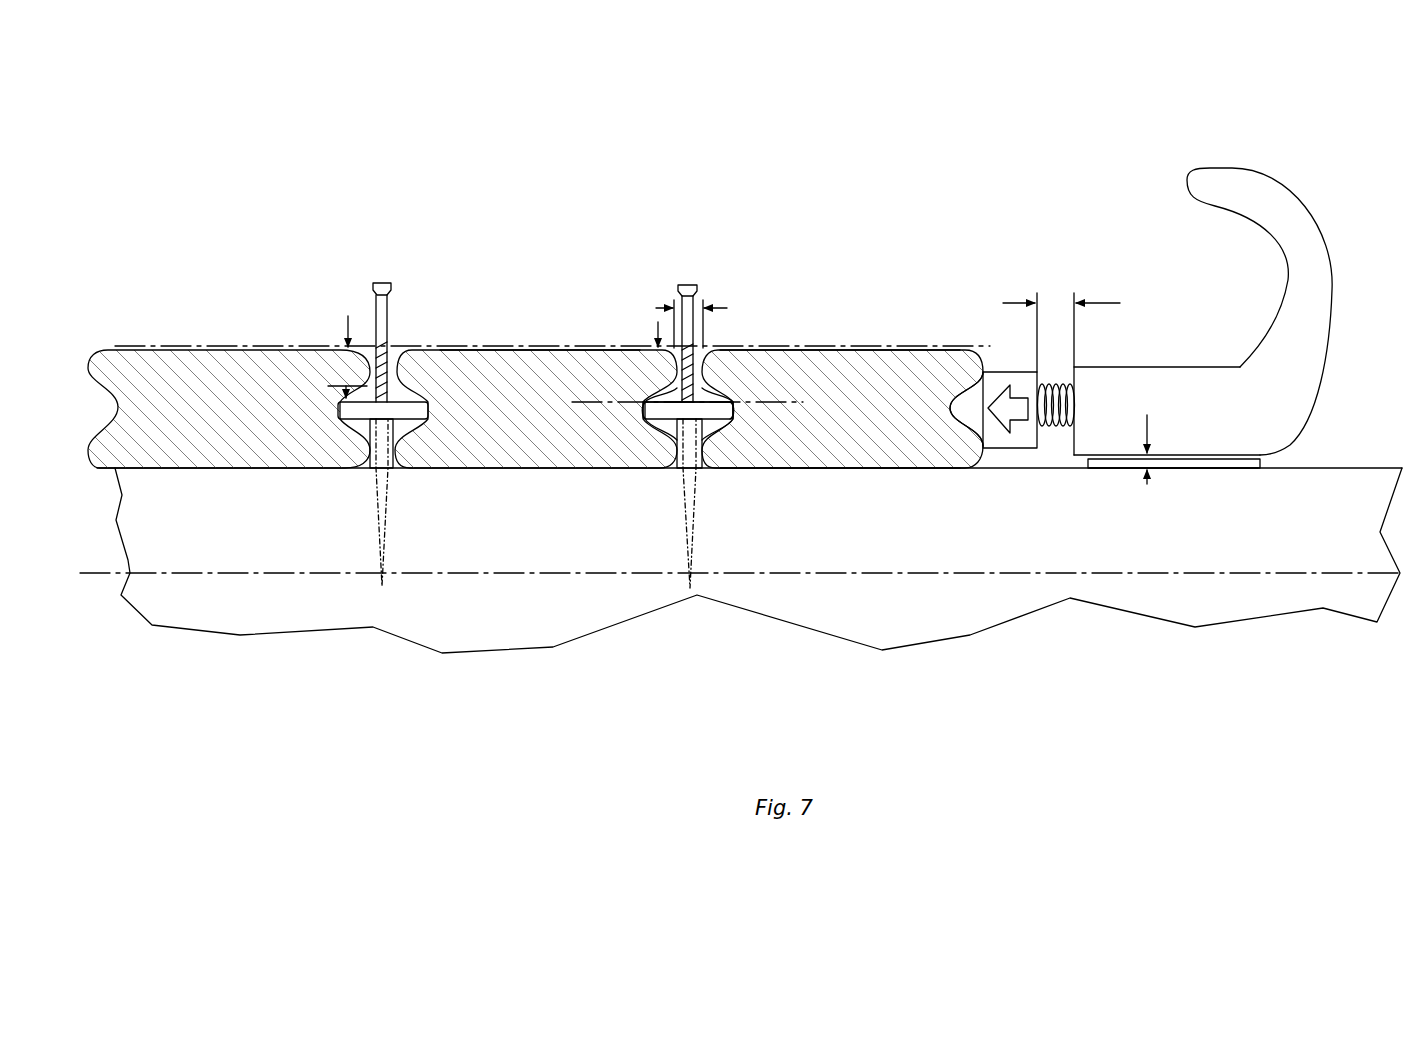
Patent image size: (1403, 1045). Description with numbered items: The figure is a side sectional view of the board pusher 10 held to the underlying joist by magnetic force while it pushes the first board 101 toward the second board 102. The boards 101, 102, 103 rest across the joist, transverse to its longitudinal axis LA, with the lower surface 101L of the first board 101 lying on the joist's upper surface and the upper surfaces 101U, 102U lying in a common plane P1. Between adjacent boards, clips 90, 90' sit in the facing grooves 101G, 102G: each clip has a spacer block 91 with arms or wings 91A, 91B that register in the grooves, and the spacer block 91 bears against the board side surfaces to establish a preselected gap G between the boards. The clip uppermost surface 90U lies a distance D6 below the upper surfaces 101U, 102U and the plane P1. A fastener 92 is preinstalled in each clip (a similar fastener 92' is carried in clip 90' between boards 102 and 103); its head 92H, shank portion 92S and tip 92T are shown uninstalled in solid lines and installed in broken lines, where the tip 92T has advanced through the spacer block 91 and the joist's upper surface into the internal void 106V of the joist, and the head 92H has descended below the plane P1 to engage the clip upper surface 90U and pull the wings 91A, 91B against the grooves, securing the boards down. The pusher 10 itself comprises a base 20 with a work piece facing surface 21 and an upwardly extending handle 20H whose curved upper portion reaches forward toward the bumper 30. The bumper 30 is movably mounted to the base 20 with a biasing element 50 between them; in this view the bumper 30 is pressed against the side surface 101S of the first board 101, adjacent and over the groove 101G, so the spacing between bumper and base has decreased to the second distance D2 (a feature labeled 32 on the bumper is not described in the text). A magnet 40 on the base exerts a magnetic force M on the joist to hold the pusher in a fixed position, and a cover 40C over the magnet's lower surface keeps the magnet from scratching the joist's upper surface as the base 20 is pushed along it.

The board pusher 10 is at (1180, 348).
The base 20 is at (1220, 339).
The handle 20H is at (1270, 203).
The work piece facing surface 21 is at (1068, 442).
The bumper 30 is at (1002, 448).
The abutment surface 32 is at (1038, 370).
The magnet 40 is at (1273, 458).
The cover 40C is at (1215, 469).
The biasing element 50 is at (1045, 428).
The clip 90 is at (693, 409).
The clip 90' is at (339, 444).
The clip uppermost surface 90U is at (716, 396).
The spacer block 91 is at (687, 470).
The arm or wing 91A is at (646, 401).
The arm or wing 91B is at (708, 399).
The fastener 92 is at (695, 397).
The fastener 92' is at (387, 419).
The head 92H is at (694, 291).
The screw shank 92S is at (688, 303).
The tip 92T is at (690, 535).
The first board 101 is at (853, 468).
The upper surface 101U is at (892, 350).
The side surface 101S is at (983, 362).
The groove 101G is at (720, 428).
The lower surface 101L is at (900, 468).
The second board 102 is at (527, 468).
The upper surface 102U is at (438, 350).
The groove 102G is at (657, 406).
The board 103 is at (215, 468).
The void or internal space 106V is at (855, 595).
The longitudinal axis LA is at (307, 573).
The plane P1 is at (233, 346).
The distance D6 is at (485, 324).
The second distance D2 is at (1080, 304).
The gap G is at (701, 323).
The magnetic force M is at (1147, 475).